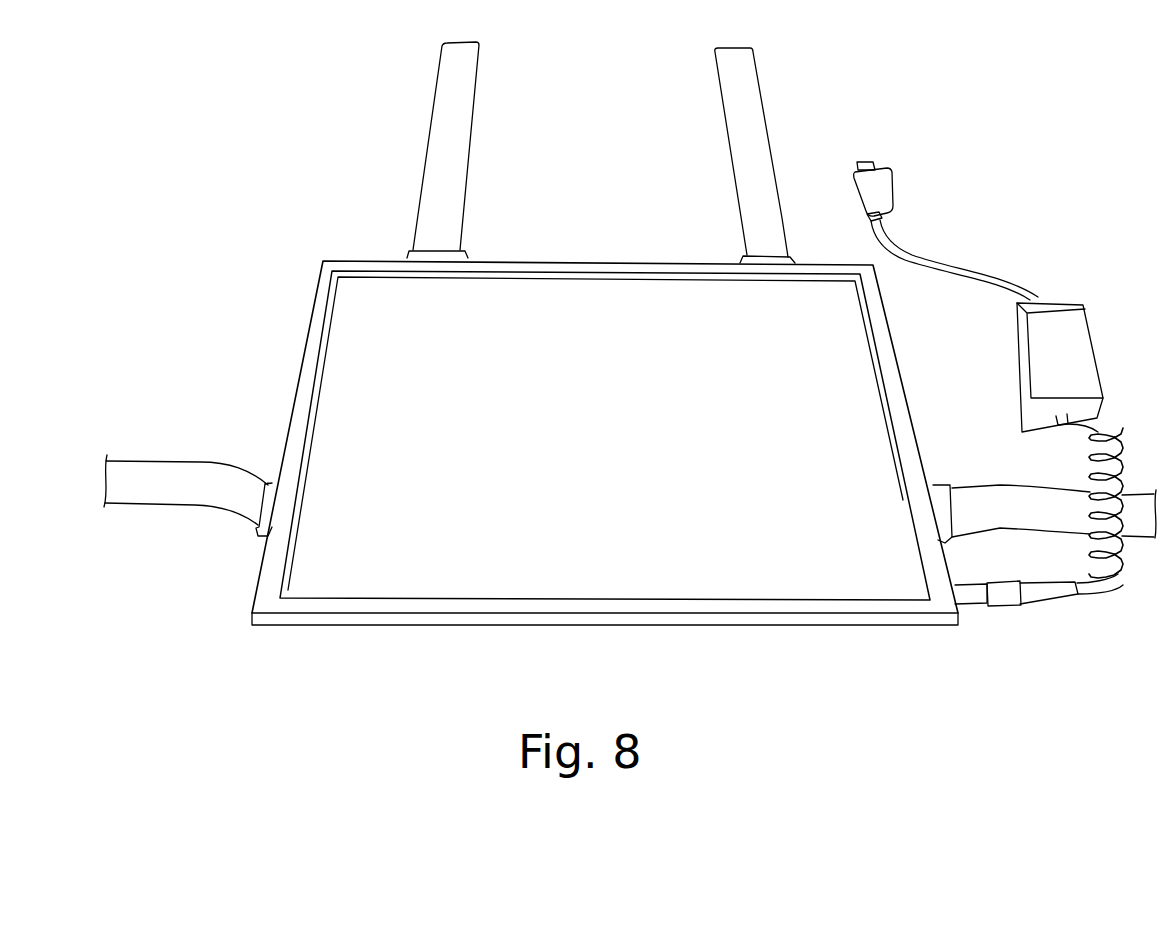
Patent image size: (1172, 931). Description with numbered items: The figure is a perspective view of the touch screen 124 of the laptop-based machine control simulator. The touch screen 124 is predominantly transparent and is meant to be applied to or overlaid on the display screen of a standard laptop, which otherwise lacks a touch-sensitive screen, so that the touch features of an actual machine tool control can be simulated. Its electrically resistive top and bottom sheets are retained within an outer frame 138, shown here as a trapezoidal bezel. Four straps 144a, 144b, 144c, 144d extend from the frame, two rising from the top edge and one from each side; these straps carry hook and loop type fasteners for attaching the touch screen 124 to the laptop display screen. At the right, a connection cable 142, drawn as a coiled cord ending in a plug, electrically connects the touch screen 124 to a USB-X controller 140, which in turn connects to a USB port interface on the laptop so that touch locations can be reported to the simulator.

The touch screen 124 is at (604, 413).
The outer frame 138 is at (480, 627).
The USB-X controller 140 is at (1013, 313).
The connection cable 142 is at (1030, 582).
The strap 144a is at (158, 460).
The strap 144b is at (417, 208).
The strap 144c is at (740, 195).
The strap 144d is at (992, 488).